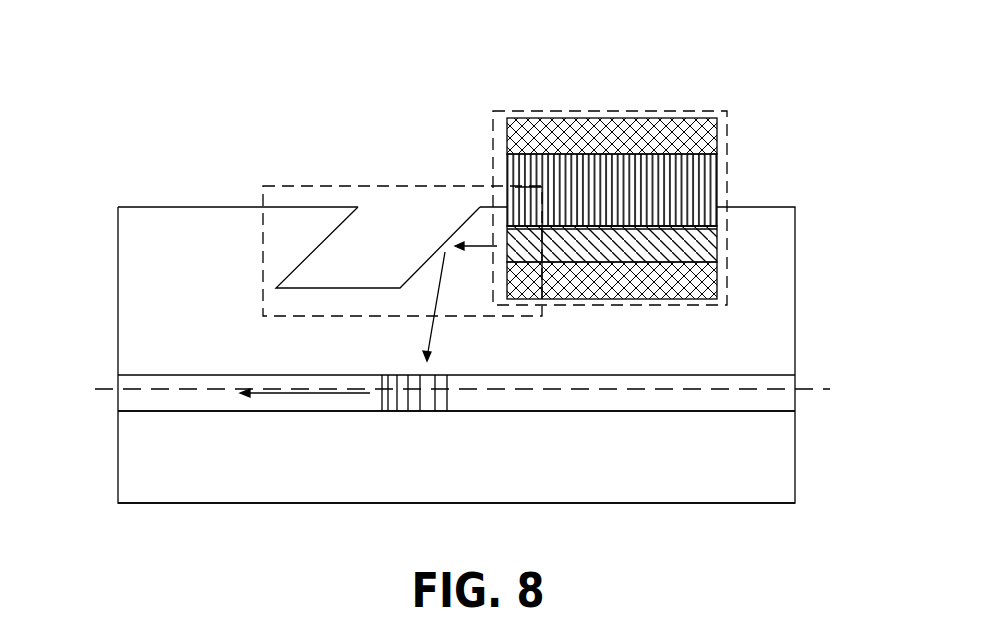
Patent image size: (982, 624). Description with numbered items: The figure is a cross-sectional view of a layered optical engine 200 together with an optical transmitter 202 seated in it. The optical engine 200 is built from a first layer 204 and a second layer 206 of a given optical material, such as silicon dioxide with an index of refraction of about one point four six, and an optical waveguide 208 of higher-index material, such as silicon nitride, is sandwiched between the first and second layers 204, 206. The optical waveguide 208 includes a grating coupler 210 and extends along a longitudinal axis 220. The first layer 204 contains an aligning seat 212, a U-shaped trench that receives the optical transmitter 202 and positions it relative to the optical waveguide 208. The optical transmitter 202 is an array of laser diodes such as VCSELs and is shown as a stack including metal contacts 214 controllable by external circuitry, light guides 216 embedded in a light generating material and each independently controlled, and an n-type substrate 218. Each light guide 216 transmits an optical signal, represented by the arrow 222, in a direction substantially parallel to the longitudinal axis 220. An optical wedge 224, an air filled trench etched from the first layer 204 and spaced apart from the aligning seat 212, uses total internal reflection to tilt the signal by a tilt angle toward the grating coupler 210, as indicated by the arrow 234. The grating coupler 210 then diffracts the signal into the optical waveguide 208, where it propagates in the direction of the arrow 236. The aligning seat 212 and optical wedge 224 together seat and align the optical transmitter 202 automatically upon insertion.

The optical engine 200 is at (184, 316).
The optical transmitter 202 is at (492, 115).
The first layer 204 is at (117, 240).
The second layer 206 is at (117, 465).
The optical waveguide 208 is at (487, 412).
The grating coupler 210 is at (418, 412).
The aligning seat 212 is at (720, 233).
The metal contacts 214 is at (717, 132).
The light guides 216 is at (717, 259).
The n-type substrate 218 is at (717, 180).
The longitudinal axis 220 is at (117, 387).
The arrow 222 is at (480, 247).
The optical wedge 224 is at (352, 318).
The arrow 234 is at (432, 333).
The arrow 236 is at (280, 395).